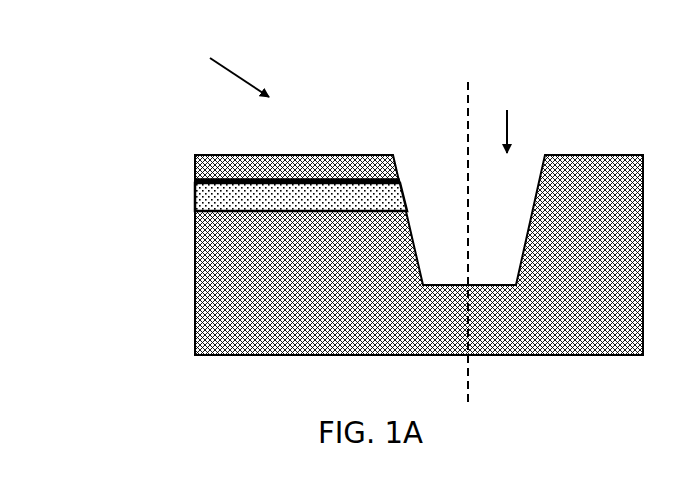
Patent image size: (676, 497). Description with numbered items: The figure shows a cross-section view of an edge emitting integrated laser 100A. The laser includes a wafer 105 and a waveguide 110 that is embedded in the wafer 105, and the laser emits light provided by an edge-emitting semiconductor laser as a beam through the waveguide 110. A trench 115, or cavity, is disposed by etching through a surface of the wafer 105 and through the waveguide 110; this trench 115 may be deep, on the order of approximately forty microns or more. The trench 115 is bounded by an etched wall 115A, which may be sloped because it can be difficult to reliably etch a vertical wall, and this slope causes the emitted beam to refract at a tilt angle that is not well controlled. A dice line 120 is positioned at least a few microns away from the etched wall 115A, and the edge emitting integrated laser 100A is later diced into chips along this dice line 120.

The edge emitting integrated laser 100A is at (225, 59).
The wafer 105 is at (195, 293).
The waveguide 110 is at (195, 190).
The trench 115 is at (507, 118).
The etched wall 115A is at (398, 193).
The dice line 120 is at (468, 82).